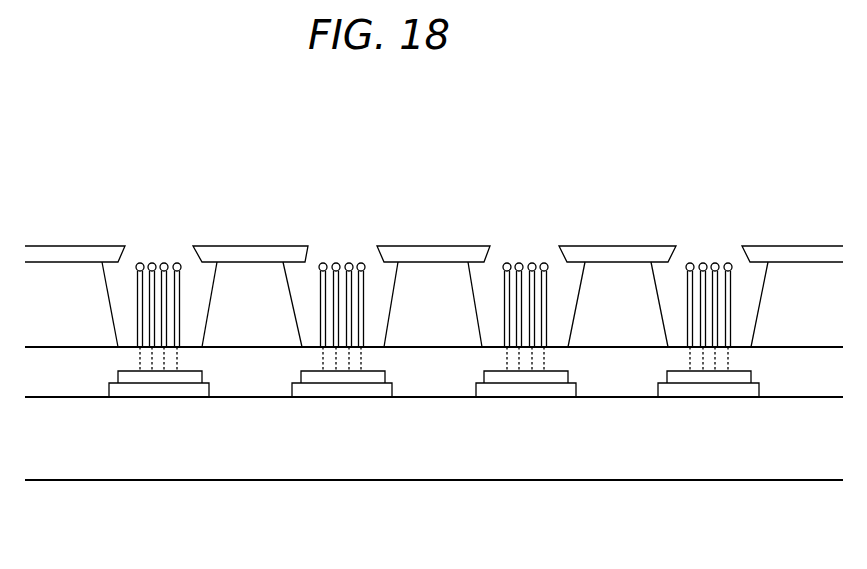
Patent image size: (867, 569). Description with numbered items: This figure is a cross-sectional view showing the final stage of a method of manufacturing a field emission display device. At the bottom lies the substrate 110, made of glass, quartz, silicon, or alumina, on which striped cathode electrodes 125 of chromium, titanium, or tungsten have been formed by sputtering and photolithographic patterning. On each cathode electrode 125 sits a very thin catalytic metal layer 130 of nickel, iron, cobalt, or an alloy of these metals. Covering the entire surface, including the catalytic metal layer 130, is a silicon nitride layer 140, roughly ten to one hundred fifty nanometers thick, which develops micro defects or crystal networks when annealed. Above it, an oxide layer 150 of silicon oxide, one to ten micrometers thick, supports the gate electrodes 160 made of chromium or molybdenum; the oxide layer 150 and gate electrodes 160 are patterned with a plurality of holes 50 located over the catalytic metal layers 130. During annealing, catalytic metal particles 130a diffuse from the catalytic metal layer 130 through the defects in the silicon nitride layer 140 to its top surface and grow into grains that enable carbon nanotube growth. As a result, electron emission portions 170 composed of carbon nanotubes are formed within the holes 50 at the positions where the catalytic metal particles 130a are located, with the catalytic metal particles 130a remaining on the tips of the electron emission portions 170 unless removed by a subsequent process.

The holes 50 is at (124, 363).
The substrate 110 is at (705, 465).
The cathode electrodes 125 is at (328, 390).
The catalytic metal layer 130 is at (357, 375).
The catalytic metal particles 130a is at (349, 263).
The silicon nitride layer 140 is at (623, 375).
The oxide layer 150 is at (443, 327).
The gate electrodes 160 is at (258, 255).
The electron emission portions 170 is at (139, 287).